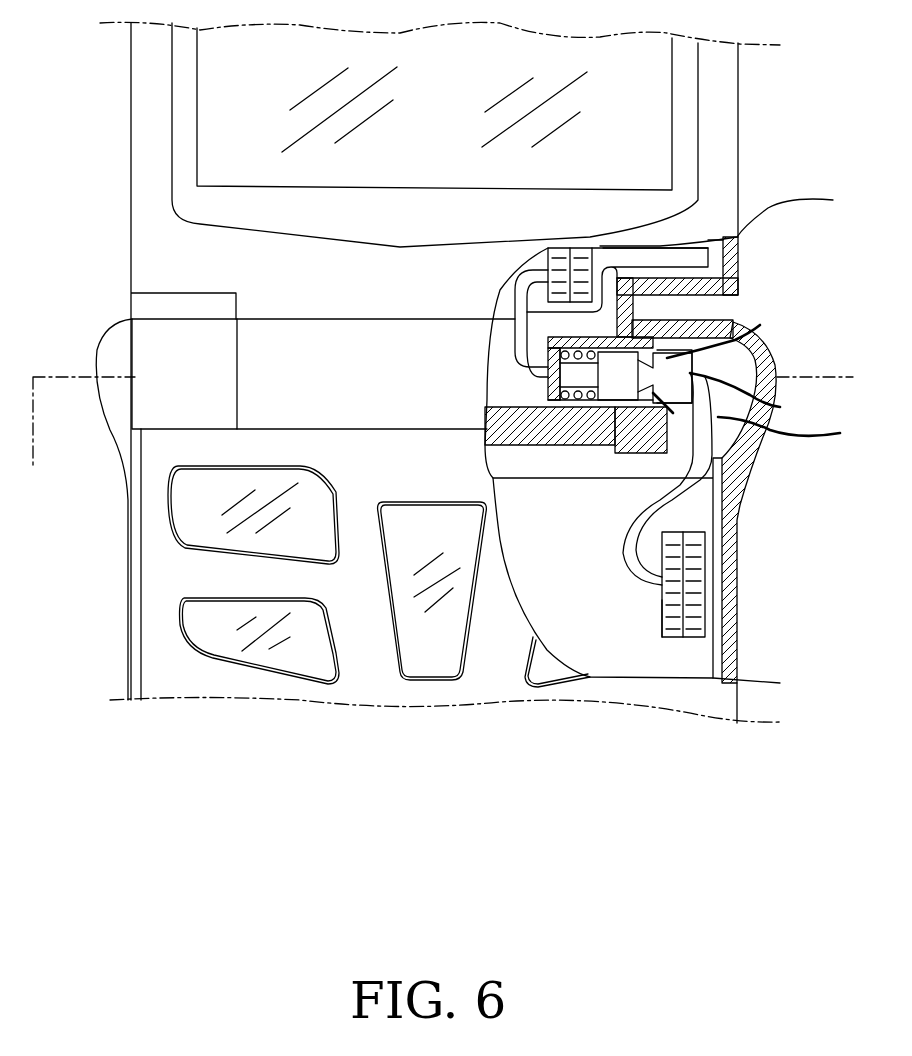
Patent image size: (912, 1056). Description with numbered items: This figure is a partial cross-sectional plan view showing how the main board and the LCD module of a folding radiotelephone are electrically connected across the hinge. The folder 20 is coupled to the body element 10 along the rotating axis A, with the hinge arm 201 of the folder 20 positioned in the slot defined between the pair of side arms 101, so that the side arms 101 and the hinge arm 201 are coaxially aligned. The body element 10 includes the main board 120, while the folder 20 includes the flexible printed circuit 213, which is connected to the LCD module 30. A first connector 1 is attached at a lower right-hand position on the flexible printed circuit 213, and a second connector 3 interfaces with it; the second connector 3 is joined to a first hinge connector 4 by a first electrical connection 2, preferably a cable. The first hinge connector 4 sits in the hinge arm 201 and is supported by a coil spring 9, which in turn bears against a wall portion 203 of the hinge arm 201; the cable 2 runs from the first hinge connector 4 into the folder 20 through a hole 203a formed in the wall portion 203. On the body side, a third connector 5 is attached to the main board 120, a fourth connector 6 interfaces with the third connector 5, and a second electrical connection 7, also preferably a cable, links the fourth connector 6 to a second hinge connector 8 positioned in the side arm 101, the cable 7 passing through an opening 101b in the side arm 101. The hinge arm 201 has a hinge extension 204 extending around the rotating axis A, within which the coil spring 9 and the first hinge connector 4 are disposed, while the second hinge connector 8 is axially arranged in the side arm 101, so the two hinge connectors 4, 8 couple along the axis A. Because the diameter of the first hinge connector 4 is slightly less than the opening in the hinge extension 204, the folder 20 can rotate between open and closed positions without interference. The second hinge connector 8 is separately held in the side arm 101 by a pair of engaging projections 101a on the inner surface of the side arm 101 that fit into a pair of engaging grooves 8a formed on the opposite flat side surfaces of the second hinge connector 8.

The first connector 1 is at (600, 246).
The first electrical connection 2 is at (515, 323).
The second connector 3 is at (548, 255).
The first hinge connector 4 is at (610, 400).
The third connector 5 is at (697, 568).
The fourth connector 6 is at (673, 610).
The second electrical connection 7 is at (705, 422).
The second hinge connector 8 is at (677, 363).
The engaging grooves 8a is at (740, 367).
The coil spring 9 is at (565, 405).
The body element 10 is at (163, 577).
The folder 20 is at (112, 191).
The LCD module 30 is at (218, 110).
The side arm 101 is at (156, 393).
The engaging projections 101a is at (733, 322).
The opening 101b is at (810, 425).
The main board 120 is at (612, 637).
The hinge arm 201 is at (282, 352).
The wall portion 203 is at (547, 394).
The hole 203a is at (548, 365).
The hinge extension 204 is at (717, 417).
The flexible printed circuit 213 is at (680, 257).
The rotating axis A is at (30, 483).